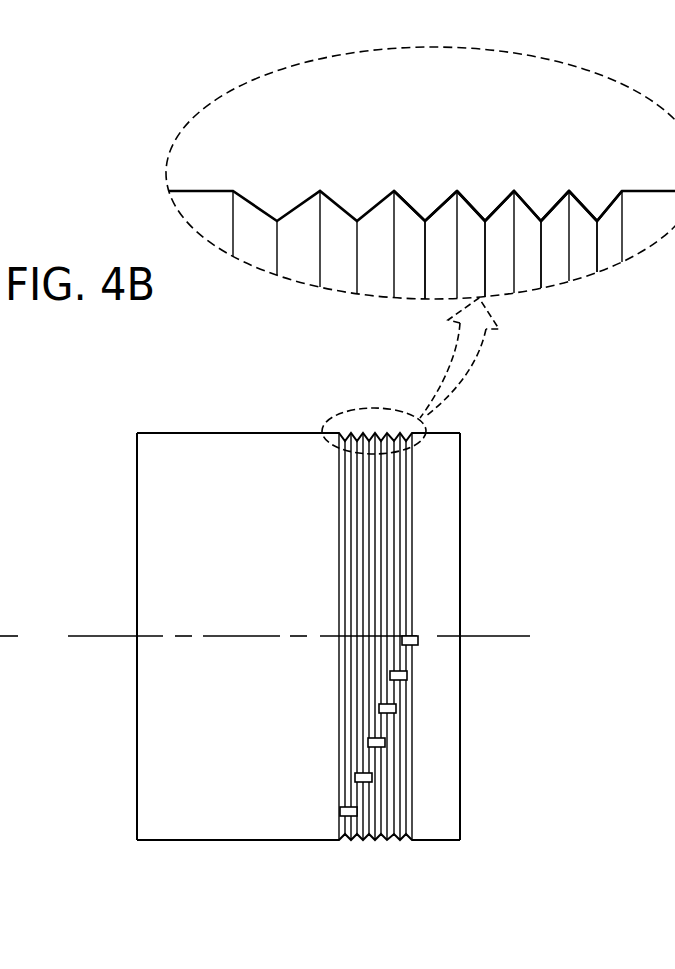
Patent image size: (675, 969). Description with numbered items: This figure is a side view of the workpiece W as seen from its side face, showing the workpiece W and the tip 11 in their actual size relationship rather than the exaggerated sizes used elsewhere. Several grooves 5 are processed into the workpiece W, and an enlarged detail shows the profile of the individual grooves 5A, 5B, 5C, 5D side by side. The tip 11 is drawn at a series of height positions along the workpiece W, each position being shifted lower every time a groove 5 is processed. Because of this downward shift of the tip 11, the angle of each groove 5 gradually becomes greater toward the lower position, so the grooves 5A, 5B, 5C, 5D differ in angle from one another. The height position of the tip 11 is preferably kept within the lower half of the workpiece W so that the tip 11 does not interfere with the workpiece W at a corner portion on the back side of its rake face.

The groove 5 is at (628, 113).
The groove 5A is at (598, 200).
The groove 5B is at (543, 199).
The groove 5C is at (486, 200).
The groove 5D is at (427, 200).
The workpiece W is at (237, 453).
The tip 11 is at (417, 636).